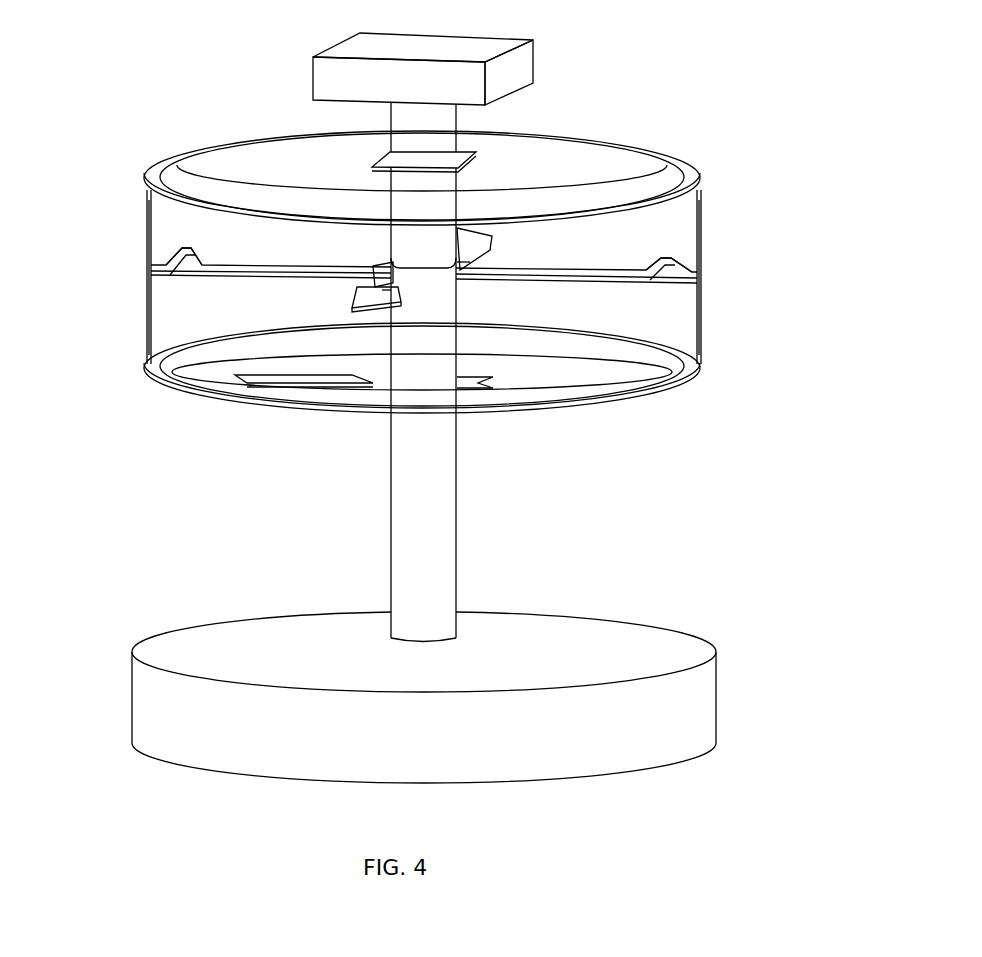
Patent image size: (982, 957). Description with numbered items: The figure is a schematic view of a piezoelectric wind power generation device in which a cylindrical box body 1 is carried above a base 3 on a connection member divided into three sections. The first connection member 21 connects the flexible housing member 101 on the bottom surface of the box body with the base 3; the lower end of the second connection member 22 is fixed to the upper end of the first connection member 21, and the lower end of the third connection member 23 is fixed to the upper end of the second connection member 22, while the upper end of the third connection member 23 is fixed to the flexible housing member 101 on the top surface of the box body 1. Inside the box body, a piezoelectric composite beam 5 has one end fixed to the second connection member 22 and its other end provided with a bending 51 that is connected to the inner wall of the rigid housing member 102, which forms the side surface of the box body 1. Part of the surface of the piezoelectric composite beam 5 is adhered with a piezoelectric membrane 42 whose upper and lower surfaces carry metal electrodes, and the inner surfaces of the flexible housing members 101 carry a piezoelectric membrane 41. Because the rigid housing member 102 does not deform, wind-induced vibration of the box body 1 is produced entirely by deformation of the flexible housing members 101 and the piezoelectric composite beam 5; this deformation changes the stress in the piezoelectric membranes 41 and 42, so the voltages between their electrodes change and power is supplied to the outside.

The cylindrical box body 1 is at (688, 303).
The flexible housing member 101 is at (250, 141).
The rigid housing member 102 is at (150, 232).
The base 3 is at (553, 640).
The piezoelectric composite beam 5 is at (625, 268).
The bending 51 is at (665, 259).
The first connection member 21 is at (432, 530).
The second connection member 22 is at (442, 325).
The third connection member 23 is at (425, 238).
The piezoelectric membrane 41 is at (390, 375).
The piezoelectric membrane 42 is at (405, 293).